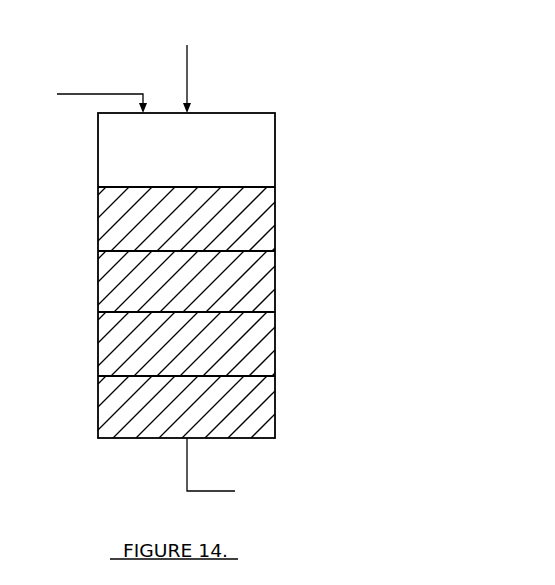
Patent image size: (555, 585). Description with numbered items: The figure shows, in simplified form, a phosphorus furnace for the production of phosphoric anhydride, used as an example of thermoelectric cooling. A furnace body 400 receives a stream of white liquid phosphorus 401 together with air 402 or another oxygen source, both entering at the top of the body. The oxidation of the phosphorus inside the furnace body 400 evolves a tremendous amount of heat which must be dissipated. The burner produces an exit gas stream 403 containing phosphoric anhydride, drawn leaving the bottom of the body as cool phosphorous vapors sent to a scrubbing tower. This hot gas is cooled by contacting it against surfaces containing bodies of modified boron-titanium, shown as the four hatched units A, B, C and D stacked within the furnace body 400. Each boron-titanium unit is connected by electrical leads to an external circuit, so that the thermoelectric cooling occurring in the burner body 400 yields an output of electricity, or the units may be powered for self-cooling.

The furnace body 400 is at (80, 214).
The white liquid phosphorus stream 401 is at (251, 67).
The air stream 402 is at (86, 87).
The exit gas stream 403 is at (357, 473).